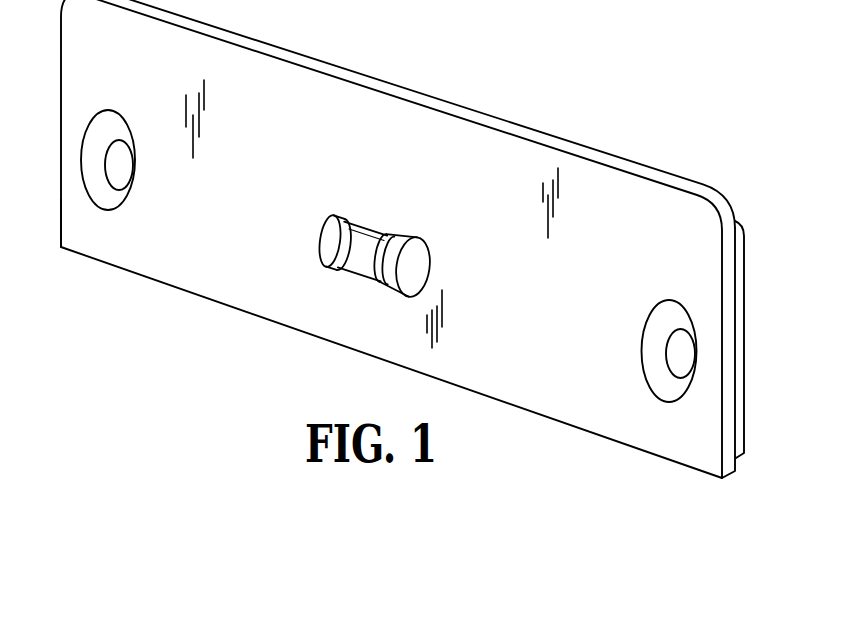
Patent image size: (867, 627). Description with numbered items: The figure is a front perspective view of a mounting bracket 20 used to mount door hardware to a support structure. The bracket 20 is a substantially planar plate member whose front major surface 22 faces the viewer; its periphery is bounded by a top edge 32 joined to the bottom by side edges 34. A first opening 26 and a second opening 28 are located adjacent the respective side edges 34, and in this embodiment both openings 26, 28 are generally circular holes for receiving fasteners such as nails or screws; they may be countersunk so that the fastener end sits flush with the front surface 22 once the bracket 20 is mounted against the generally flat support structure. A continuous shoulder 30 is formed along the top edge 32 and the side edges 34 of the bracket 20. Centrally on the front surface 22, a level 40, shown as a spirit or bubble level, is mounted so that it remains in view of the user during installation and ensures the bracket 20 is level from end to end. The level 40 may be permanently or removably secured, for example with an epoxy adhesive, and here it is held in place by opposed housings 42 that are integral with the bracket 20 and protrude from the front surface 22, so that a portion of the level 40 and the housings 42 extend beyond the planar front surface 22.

The mounting bracket 20 is at (423, 239).
The front major surface 22 is at (326, 90).
The first opening 26 is at (107, 124).
The second opening 28 is at (660, 322).
The continuous shoulder 30 is at (742, 268).
The top edge 32 is at (414, 93).
The side edges 34 is at (61, 227).
The level 40 is at (367, 273).
The opposed housings 42 is at (320, 231).